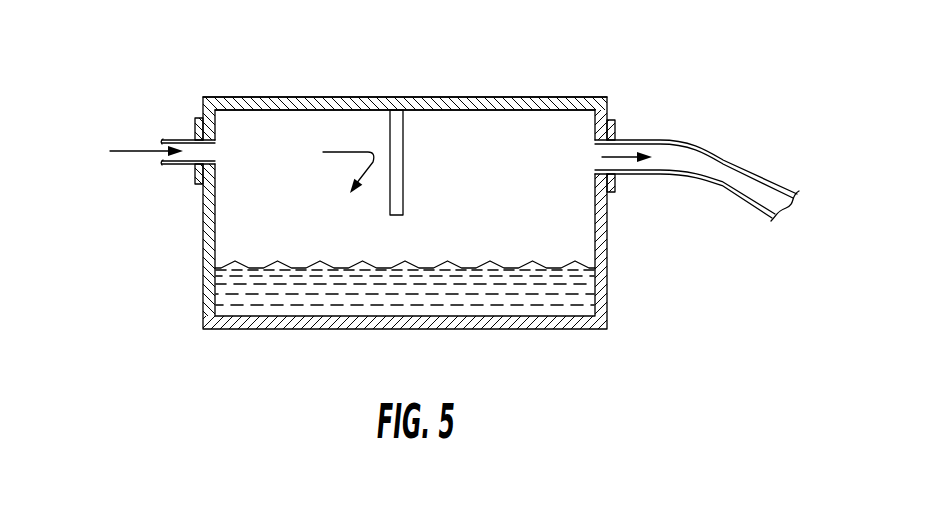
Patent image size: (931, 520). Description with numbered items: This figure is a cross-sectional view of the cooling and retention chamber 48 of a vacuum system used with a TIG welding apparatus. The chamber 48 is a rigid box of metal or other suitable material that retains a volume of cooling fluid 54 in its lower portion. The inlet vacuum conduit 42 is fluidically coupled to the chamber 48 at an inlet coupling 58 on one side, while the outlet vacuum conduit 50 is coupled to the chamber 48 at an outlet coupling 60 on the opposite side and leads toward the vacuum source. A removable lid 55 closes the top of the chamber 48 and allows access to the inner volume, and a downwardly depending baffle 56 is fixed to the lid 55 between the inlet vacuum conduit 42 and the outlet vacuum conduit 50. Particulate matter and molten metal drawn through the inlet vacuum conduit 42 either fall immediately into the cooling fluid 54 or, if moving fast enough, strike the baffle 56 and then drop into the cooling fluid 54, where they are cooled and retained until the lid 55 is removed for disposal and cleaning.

The vacuum conduit 42 is at (178, 139).
The cooling and retention chamber 48 is at (376, 60).
The outlet vacuum conduit 50 is at (665, 140).
The cooling fluid 54 is at (217, 288).
The removable lid 55 is at (558, 98).
The baffle 56 is at (403, 155).
The inlet coupling 58 is at (197, 124).
The outlet coupling 60 is at (613, 177).